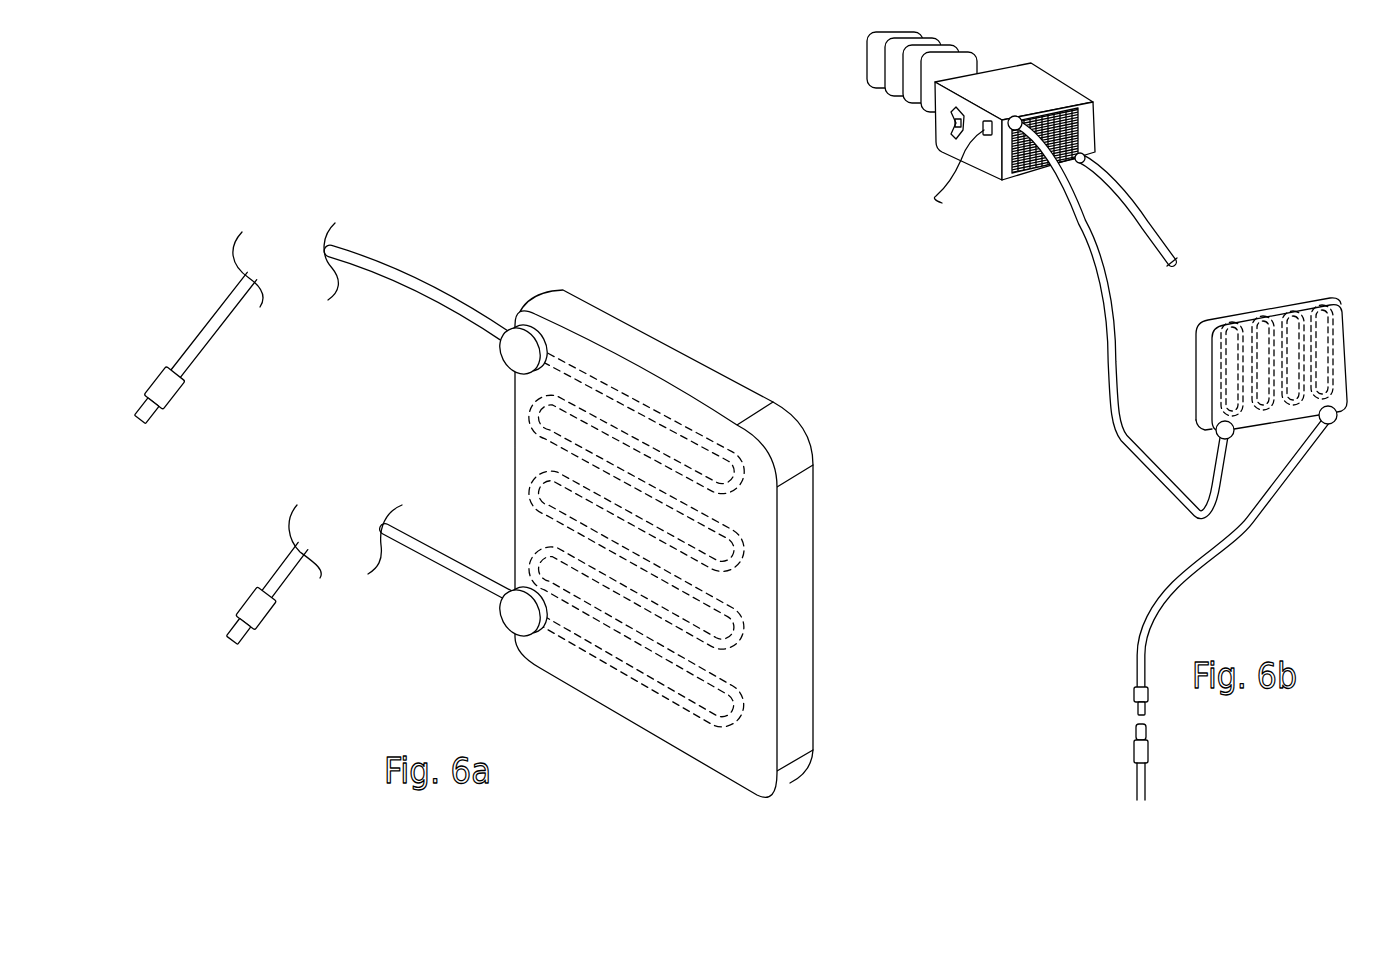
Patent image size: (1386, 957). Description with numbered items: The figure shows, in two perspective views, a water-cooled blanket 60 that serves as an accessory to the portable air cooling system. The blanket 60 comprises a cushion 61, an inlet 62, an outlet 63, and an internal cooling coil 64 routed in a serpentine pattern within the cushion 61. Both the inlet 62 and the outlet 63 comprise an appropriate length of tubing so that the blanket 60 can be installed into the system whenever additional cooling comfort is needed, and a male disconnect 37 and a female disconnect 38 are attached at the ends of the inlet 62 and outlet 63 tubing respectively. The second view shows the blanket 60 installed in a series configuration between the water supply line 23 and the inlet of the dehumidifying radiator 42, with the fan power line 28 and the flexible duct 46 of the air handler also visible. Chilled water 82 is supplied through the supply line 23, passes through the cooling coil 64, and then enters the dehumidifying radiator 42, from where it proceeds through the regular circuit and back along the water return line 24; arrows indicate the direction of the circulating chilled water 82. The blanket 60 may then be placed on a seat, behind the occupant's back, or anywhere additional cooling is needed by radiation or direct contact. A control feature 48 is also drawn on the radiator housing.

In FIG. 6A, the water-cooled blanket 60 is at (471, 486).
In FIG. 6B, the water-cooled blanket 60 is at (1075, 421).
In FIG. 6A, the cushion 61 is at (714, 384).
In FIG. 6B, the cushion 61 is at (1260, 305).
In FIG. 6A, the inlet 62 is at (384, 262).
In FIG. 6B, the inlet 62 is at (1263, 505).
In FIG. 6A, the outlet 63 is at (418, 532).
In FIG. 6B, the outlet 63 is at (1118, 405).
In FIG. 6A, the internal cooling coil 64 is at (540, 352).
In FIG. 6B, the internal cooling coil 64 is at (1319, 310).
In FIG. 6A, the male disconnect 37 is at (160, 397).
In FIG. 6B, the male disconnect 37 is at (1135, 697).
In FIG. 6A, the female disconnect 38 is at (243, 610).
In FIG. 6B, the female disconnect 38 is at (1017, 120).
In FIG. 6B, the dehumidifying radiator 42 is at (1067, 128).
In FIG. 6B, the flexible duct 46 is at (960, 47).
In FIG. 6B, the control switch 48 is at (957, 123).
In FIG. 6B, the fan power line 28 is at (951, 168).
In FIG. 6B, the water return line 24 is at (1125, 202).
In FIG. 6B, the water supply line 23 is at (1137, 780).
In FIG. 6B, the chilled water 82 is at (1204, 248).